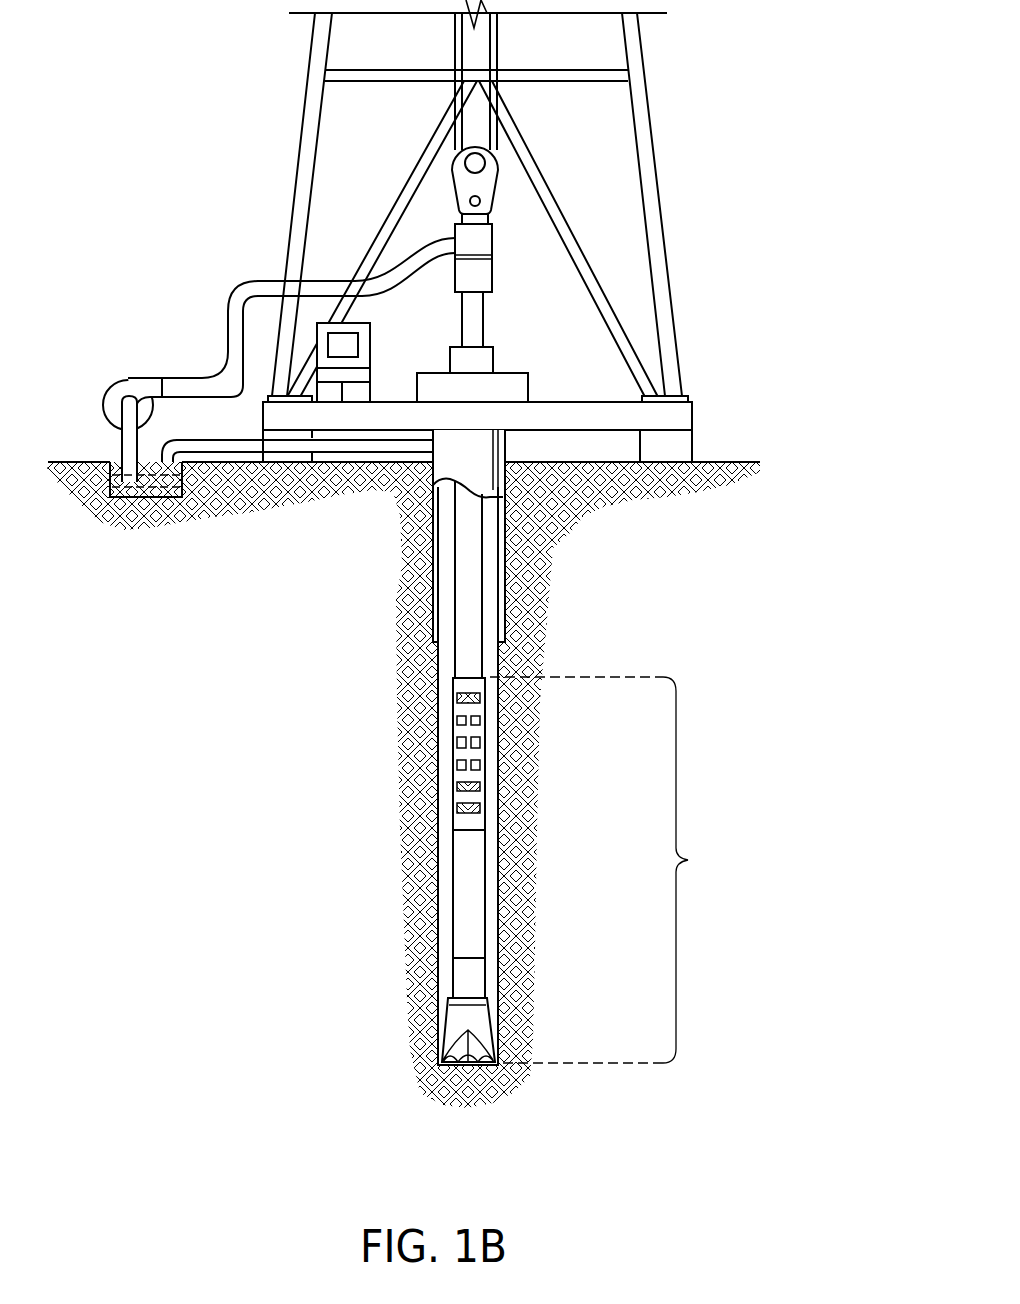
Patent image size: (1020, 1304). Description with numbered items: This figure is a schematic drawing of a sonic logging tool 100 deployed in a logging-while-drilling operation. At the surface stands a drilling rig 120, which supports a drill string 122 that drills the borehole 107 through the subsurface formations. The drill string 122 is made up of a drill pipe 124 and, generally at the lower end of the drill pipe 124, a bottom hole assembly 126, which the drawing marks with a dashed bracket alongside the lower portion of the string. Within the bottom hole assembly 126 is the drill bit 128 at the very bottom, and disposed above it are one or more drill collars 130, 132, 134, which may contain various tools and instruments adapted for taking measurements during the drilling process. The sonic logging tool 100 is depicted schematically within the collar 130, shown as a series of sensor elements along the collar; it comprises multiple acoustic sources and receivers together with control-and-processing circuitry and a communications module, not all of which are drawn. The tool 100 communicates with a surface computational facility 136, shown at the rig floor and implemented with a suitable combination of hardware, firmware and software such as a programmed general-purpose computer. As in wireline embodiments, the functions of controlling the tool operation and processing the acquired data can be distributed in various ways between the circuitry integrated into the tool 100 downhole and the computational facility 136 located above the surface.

The drilling rig 120 is at (458, 248).
The surface computational facility 136 is at (356, 323).
The borehole 107 is at (512, 460).
The drill pipe 124 is at (482, 542).
The drill string 122 is at (487, 853).
The bottom hole assembly 126 is at (614, 870).
The drill collar 130 is at (453, 753).
The sonic logging tool 100 is at (371, 754).
The drill collar 132 is at (460, 892).
The drill collar 134 is at (460, 975).
The drill bit 128 is at (477, 1022).